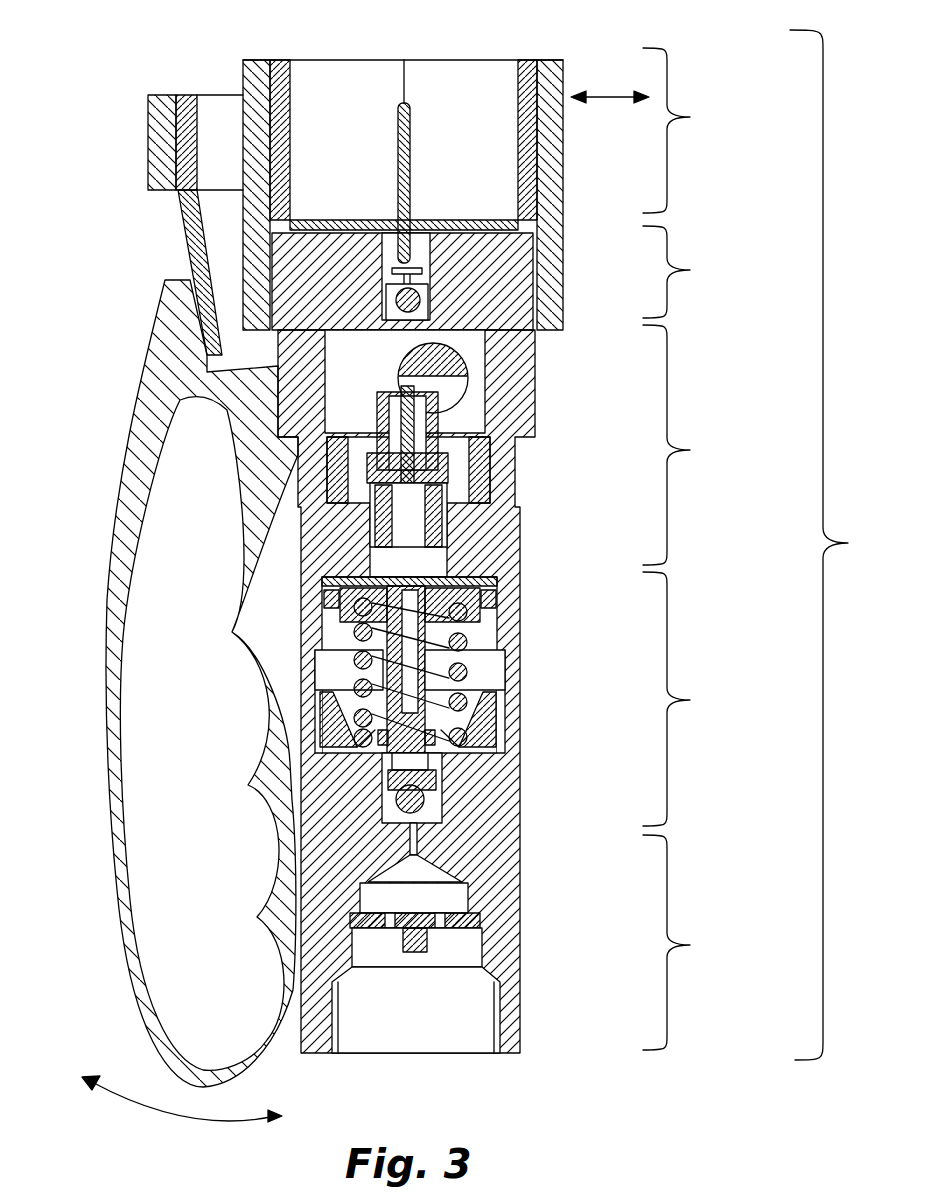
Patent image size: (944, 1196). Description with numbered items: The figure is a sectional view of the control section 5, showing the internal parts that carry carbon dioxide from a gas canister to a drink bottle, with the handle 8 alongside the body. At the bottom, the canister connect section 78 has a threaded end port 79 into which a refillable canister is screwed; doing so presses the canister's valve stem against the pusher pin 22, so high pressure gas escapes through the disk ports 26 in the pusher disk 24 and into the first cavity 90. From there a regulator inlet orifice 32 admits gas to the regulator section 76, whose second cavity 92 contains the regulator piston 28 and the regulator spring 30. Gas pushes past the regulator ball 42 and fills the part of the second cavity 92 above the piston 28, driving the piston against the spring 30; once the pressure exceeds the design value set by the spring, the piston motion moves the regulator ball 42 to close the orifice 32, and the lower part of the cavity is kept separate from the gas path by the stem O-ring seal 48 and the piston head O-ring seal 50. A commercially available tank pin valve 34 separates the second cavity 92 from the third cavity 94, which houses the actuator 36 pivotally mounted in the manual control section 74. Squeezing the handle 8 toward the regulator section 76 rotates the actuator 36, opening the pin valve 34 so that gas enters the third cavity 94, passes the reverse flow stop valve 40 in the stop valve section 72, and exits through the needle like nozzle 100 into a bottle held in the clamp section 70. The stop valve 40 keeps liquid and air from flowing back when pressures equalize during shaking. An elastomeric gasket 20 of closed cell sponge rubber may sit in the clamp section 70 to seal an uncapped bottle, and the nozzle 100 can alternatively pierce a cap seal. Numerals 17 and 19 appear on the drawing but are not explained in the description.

The control section 5 is at (835, 545).
The handle 8 is at (105, 614).
The reservoir cup 17 is at (565, 132).
The cup side wall 19 is at (253, 60).
The elastomeric gasket 20 is at (532, 60).
The pusher pin 22 is at (425, 950).
The pusher disk 24 is at (500, 922).
The disk ports 26 is at (388, 928).
The regulator piston 28 is at (483, 580).
The regulator spring 30 is at (478, 712).
The regulator inlet orifice 32 is at (425, 860).
The tank pin valve 34 is at (450, 470).
The actuator 36 is at (440, 400).
The reverse flow stop valve 40 is at (395, 287).
The regulator ball 42 is at (445, 800).
The stem O-ring seal 48 is at (440, 757).
The piston head O-ring seal 50 is at (492, 596).
The clamp section 70 is at (687, 130).
The stop valve section 72 is at (687, 272).
The manual control section 74 is at (687, 445).
The regulator section 76 is at (687, 699).
The canister connect section 78 is at (687, 942).
The end port 79 is at (506, 1053).
The first cavity 90 is at (460, 905).
The second cavity 92 is at (480, 657).
The third cavity 94 is at (462, 344).
The needle like nozzle 100 is at (410, 112).